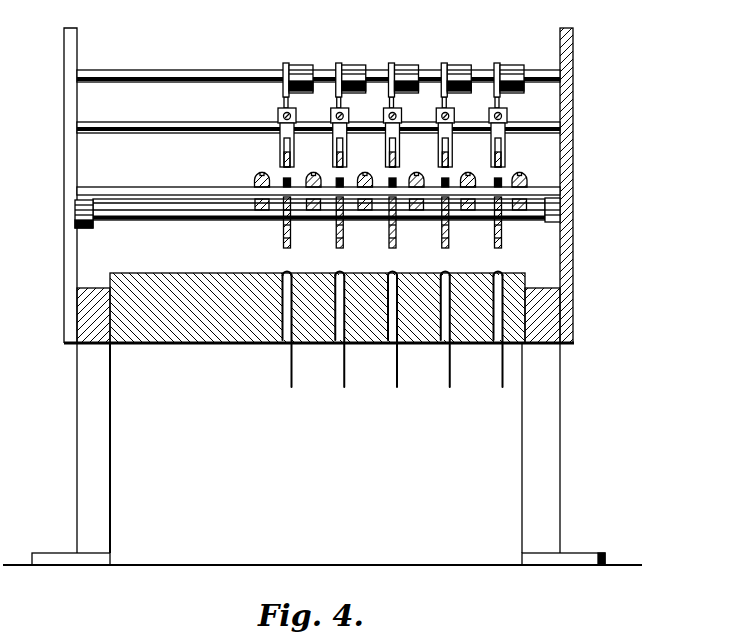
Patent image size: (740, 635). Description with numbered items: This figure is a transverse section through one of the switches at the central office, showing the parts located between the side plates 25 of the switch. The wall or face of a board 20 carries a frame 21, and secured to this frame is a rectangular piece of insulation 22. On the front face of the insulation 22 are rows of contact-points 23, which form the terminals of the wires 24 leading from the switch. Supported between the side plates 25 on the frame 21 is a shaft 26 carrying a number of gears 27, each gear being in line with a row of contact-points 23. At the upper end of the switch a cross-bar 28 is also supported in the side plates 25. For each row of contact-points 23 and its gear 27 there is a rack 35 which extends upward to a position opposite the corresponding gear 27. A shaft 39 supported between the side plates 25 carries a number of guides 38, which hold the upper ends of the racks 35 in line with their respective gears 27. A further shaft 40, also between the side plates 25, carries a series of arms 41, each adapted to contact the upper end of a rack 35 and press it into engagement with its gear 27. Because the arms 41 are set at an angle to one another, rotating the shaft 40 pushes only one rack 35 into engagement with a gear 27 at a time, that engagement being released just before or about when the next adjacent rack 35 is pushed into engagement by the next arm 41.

The wall or face of a board 20 is at (448, 565).
The frame 21 is at (559, 445).
The rectangular piece of insulation 22 is at (163, 343).
The contact-points 23 is at (388, 270).
The wires 24 is at (445, 377).
The side plates 25 is at (64, 167).
The shaft 26 is at (206, 220).
The gears 27 is at (282, 238).
The cross-bar 28 is at (138, 193).
The rack 35 is at (377, 161).
The guides 38 is at (333, 150).
The shaft 39 is at (240, 124).
The shaft 40 is at (218, 70).
The arms 41 is at (395, 102).